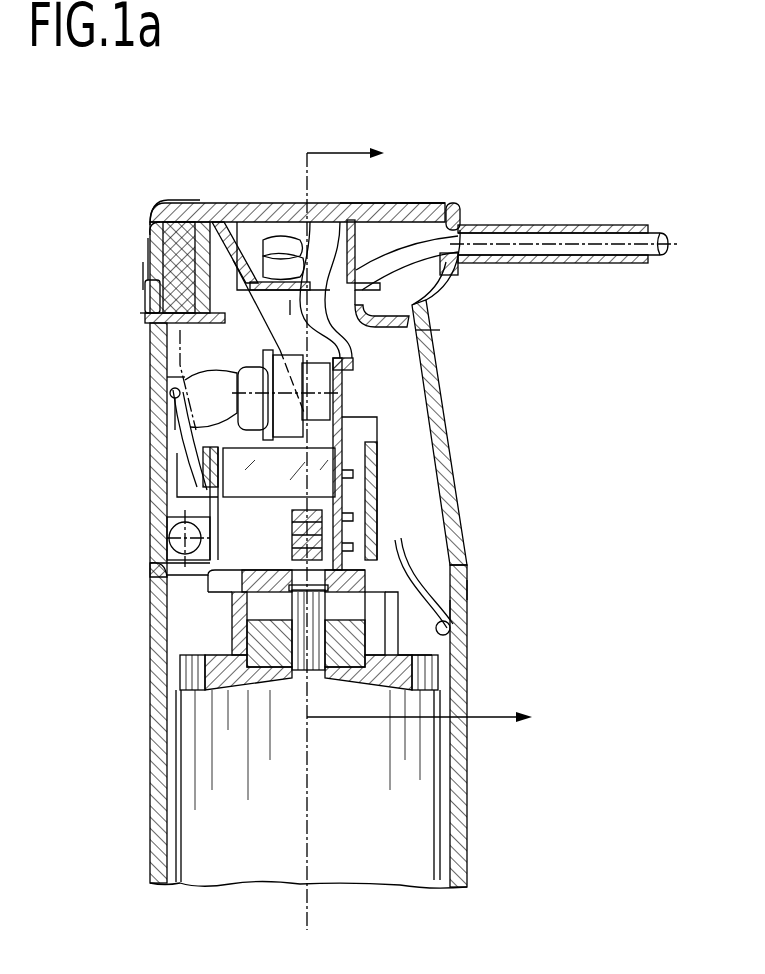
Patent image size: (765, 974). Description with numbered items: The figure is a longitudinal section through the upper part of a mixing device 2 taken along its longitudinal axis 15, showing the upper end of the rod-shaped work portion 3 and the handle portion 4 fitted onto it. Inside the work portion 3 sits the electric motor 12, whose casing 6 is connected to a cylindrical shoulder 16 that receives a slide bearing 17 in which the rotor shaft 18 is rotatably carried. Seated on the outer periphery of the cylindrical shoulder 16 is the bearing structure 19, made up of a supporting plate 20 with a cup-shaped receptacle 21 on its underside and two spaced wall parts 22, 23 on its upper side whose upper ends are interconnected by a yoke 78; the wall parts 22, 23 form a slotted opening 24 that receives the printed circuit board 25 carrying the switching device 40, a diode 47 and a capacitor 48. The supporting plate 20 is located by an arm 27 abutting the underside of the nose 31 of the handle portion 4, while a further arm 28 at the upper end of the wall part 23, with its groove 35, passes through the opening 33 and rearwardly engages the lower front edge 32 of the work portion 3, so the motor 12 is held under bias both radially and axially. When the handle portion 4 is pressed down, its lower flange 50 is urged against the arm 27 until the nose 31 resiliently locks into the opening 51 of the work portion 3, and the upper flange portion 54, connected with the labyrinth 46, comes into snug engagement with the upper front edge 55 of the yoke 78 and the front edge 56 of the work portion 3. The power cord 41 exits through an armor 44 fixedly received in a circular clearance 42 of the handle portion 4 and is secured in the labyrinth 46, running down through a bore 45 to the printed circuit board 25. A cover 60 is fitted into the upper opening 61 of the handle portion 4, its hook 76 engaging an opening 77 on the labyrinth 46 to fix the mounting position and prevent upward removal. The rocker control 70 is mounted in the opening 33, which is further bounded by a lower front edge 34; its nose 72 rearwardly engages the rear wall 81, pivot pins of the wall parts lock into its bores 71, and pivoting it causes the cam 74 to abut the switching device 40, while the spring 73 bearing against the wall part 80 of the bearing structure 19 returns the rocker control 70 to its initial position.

The mixing device 2 is at (128, 803).
The work portion 3 is at (462, 865).
The handle portion 4 is at (442, 458).
The casing 6 is at (195, 838).
The motor 12 is at (410, 840).
The longitudinal axis 15 is at (308, 205).
The cylindrical shoulder 16 is at (360, 662).
The slide bearing 17 is at (335, 667).
The shaft 18 is at (305, 655).
The bearing structure 19 is at (478, 518).
The supporting plate 20 is at (162, 592).
The cup-shaped receptacle 21 is at (455, 642).
The wall part 22 is at (380, 505).
The wall part 23 is at (233, 563).
The slotted opening 24 is at (372, 405).
The printed circuit board 25 is at (352, 372).
The arm 27 is at (452, 630).
The arm 28 is at (152, 300).
The nose 31 is at (465, 612).
The lower front edge 32 is at (157, 293).
The opening 33 is at (128, 315).
The lower front edge 34 is at (153, 578).
The groove 35 is at (138, 276).
The switching device 40 is at (258, 375).
The power cord 41 is at (603, 245).
The circular clearance 42 is at (470, 268).
The armor 44 is at (548, 228).
The bore 45 is at (290, 300).
The labyrinth 46 is at (340, 210).
The diode 47 is at (300, 540).
The capacitor 48 is at (260, 490).
The flange 50 is at (413, 575).
The opening 51 is at (490, 583).
The upper flange portion 54 is at (195, 218).
The upper front edge 55 is at (175, 205).
The front edge 56 is at (150, 225).
The cover 60 is at (428, 200).
The upper opening 61 is at (455, 203).
The rocker control 70 is at (203, 427).
The bore 71 is at (170, 535).
The nose 72 is at (238, 305).
The spring 73 is at (175, 400).
The cam 74 is at (185, 380).
The hook 76 is at (247, 205).
The opening 77 is at (270, 228).
The yoke 78 is at (178, 253).
The wall part 80 is at (210, 470).
The rear wall 81 is at (145, 320).